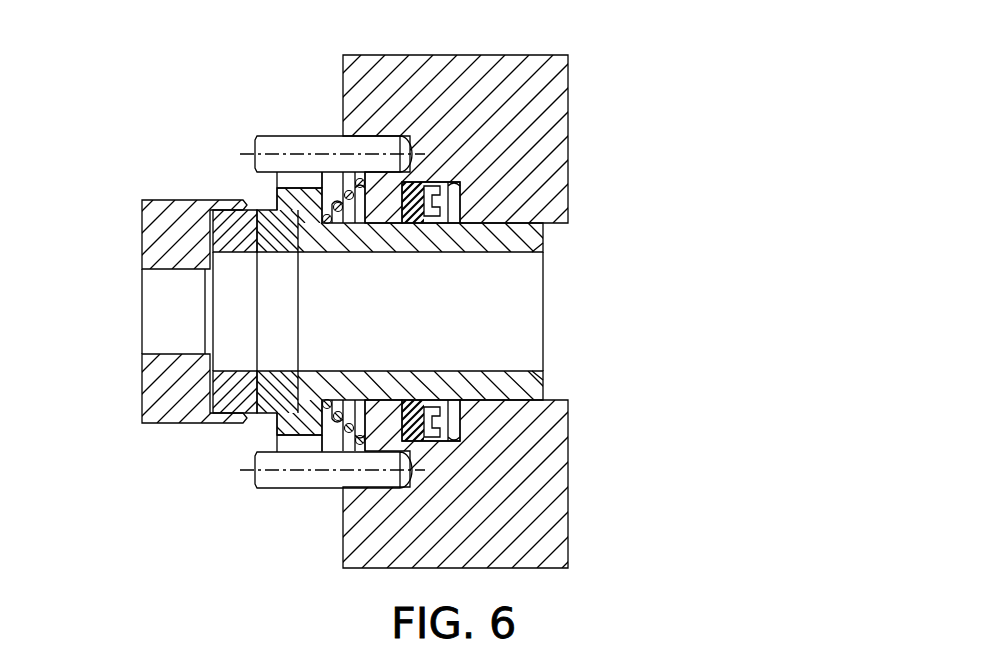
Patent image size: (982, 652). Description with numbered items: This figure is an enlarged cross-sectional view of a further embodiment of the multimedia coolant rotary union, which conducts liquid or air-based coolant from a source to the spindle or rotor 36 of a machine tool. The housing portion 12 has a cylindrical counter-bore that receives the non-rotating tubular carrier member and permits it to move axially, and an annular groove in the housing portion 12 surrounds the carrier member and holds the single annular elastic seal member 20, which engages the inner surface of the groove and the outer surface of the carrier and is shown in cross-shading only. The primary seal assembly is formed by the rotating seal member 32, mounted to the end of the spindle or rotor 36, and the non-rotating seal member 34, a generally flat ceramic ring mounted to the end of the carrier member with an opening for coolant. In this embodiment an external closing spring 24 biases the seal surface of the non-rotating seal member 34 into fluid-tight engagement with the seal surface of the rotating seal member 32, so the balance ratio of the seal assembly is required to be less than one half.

The housing portion 12 is at (510, 93).
The elastic seal member 20 is at (453, 182).
The closing spring 24 is at (342, 423).
The rotating seal member 32 is at (232, 232).
The non-rotating seal member 34 is at (277, 232).
The spindle or rotor 36 is at (178, 233).